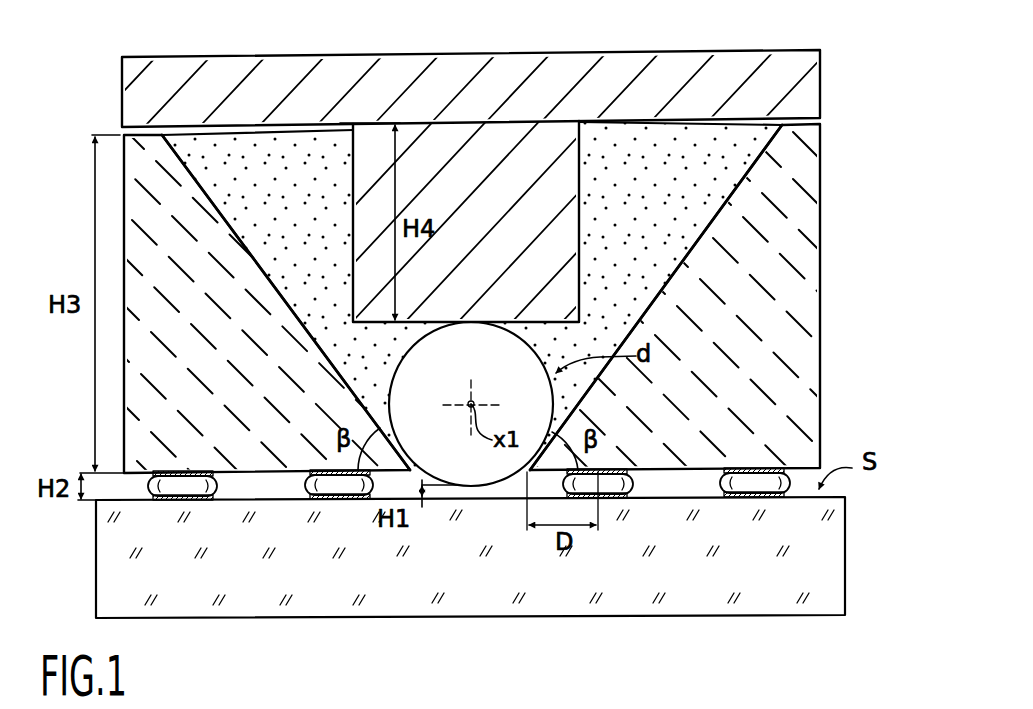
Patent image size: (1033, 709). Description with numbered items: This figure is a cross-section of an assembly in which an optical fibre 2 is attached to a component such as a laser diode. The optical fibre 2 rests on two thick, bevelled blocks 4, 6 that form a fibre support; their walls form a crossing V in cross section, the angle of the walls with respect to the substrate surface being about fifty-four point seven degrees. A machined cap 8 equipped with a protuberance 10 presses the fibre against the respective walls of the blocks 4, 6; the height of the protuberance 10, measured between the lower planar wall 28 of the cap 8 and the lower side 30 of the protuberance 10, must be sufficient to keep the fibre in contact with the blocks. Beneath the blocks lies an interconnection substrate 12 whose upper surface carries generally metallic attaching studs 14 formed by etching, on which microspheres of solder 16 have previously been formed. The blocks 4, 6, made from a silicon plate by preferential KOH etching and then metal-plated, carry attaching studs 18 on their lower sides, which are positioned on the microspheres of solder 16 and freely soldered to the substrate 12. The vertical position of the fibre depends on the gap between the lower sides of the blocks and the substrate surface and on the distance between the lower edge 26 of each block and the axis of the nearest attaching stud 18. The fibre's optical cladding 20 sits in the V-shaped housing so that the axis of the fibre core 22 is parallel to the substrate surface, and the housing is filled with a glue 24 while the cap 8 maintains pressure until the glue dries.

The optical fibre 2 is at (506, 484).
The thick bevelled block 4 is at (148, 197).
The thick bevelled block 6 is at (790, 292).
The machined cap 8 is at (120, 88).
The protuberance 10 is at (529, 155).
The interconnection substrate 12 is at (817, 573).
The attaching studs 14 is at (168, 500).
The microspheres of solder 16 is at (302, 485).
The attaching studs 18 is at (197, 472).
The optical cladding 20 is at (392, 388).
The fibre core 22 is at (471, 404).
The glue 24 is at (723, 165).
The lower edge 26 is at (518, 472).
The lower planar wall 28 is at (639, 127).
The lower side 30 is at (555, 329).